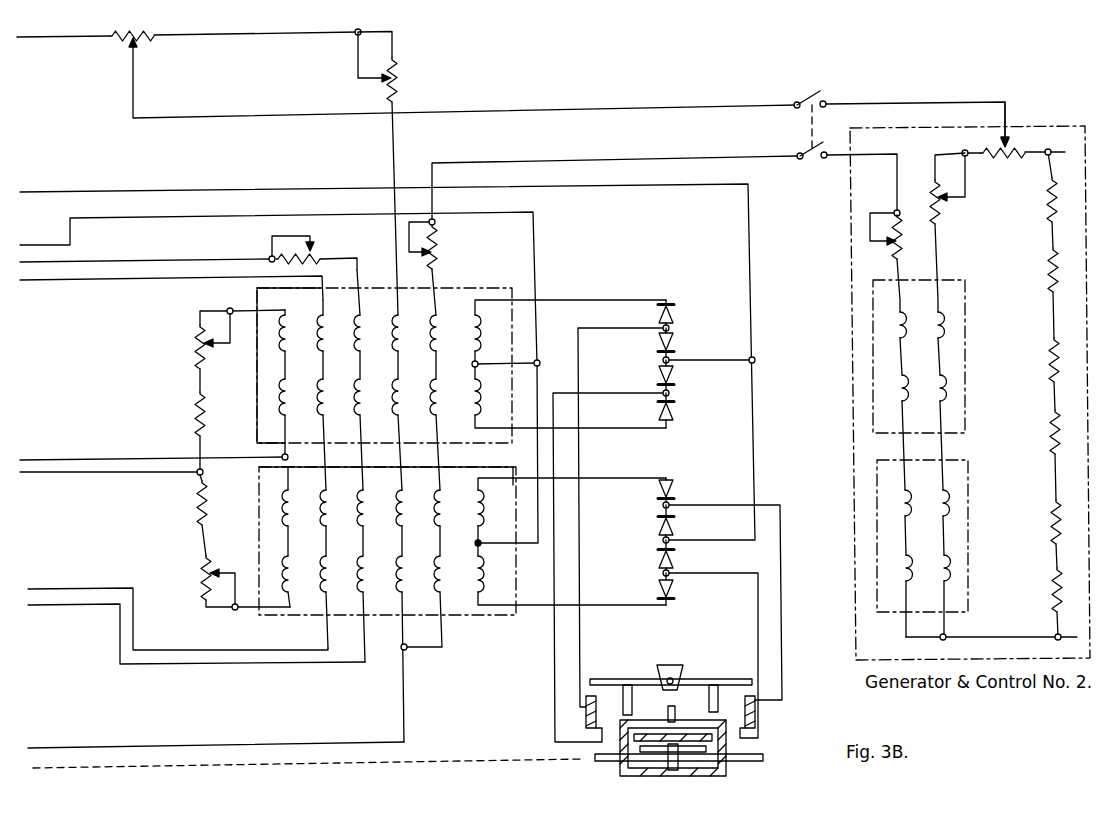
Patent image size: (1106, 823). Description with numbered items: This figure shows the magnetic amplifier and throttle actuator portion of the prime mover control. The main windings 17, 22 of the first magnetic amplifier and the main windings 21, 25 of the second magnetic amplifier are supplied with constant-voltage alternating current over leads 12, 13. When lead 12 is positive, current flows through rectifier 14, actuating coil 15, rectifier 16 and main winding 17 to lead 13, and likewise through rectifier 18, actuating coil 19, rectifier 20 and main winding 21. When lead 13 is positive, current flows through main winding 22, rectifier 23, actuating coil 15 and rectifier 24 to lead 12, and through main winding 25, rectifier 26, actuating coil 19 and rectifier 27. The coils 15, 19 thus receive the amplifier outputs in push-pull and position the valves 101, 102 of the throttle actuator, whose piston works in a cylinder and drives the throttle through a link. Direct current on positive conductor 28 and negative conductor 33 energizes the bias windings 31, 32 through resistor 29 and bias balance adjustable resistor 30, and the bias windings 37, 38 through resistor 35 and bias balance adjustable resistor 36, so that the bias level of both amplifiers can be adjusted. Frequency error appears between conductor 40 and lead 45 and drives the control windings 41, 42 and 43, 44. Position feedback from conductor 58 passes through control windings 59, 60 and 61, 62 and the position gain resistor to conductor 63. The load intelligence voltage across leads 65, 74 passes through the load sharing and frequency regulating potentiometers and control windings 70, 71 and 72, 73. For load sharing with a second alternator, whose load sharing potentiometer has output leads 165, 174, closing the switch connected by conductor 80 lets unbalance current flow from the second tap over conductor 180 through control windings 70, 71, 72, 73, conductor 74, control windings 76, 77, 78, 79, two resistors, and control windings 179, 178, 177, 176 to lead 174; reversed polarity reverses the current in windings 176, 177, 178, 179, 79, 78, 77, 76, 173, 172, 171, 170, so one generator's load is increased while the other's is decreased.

The lead 65 is at (48, 37).
The lead 12 is at (38, 192).
The lead 13 is at (30, 245).
The conductor 63 is at (60, 262).
The conductor 40 is at (60, 280).
The conductor 80 is at (604, 163).
The negative conductor 33 is at (64, 460).
The positive conductor 28 is at (66, 472).
The lead 45 is at (68, 589).
The conductor 58 is at (68, 605).
The lead 74 is at (52, 748).
The lead 165 is at (1035, 152).
The lead 174 is at (1002, 640).
The bias balance adjustable resistor 30 is at (193, 352).
The resistor 29 is at (193, 411).
The resistor 35 is at (195, 502).
The bias balance adjustable resistor 36 is at (200, 566).
The bias winding 31 is at (298, 326).
The bias winding 32 is at (298, 390).
The control winding 41 is at (336, 326).
The control winding 42 is at (336, 390).
The control winding 62 is at (373, 326).
The control winding 61 is at (373, 390).
The control winding 70 is at (411, 326).
The control winding 71 is at (411, 390).
The control winding 79 is at (449, 326).
The control winding 78 is at (449, 390).
The main winding 17 is at (484, 330).
The main winding 22 is at (484, 384).
The bias winding 38 is at (301, 504).
The bias winding 37 is at (301, 569).
The control winding 43 is at (339, 504).
The control winding 44 is at (339, 569).
The control winding 60 is at (375, 504).
The control winding 59 is at (375, 569).
The control winding 72 is at (414, 504).
The control winding 73 is at (414, 569).
The control winding 77 is at (452, 504).
The control winding 76 is at (452, 569).
The main winding 25 is at (486, 503).
The main winding 21 is at (486, 571).
The rectifier 16 is at (674, 316).
The rectifier 24 is at (674, 344).
The rectifier 14 is at (674, 377).
The rectifier 23 is at (674, 412).
The rectifier 26 is at (674, 489).
The rectifier 18 is at (659, 530).
The rectifier 27 is at (674, 558).
The rectifier 20 is at (674, 590).
The actuating coil 15 is at (604, 706).
The actuating coil 19 is at (756, 718).
The valve 101 is at (632, 700).
The valve 102 is at (728, 682).
The conductor 180 is at (840, 103).
The control winding 170 is at (950, 322).
The control winding 171 is at (952, 387).
The control winding 172 is at (955, 500).
The control winding 173 is at (956, 565).
The control winding 176 is at (922, 556).
The control winding 177 is at (921, 491).
The control winding 178 is at (918, 399).
The control winding 179 is at (917, 336).